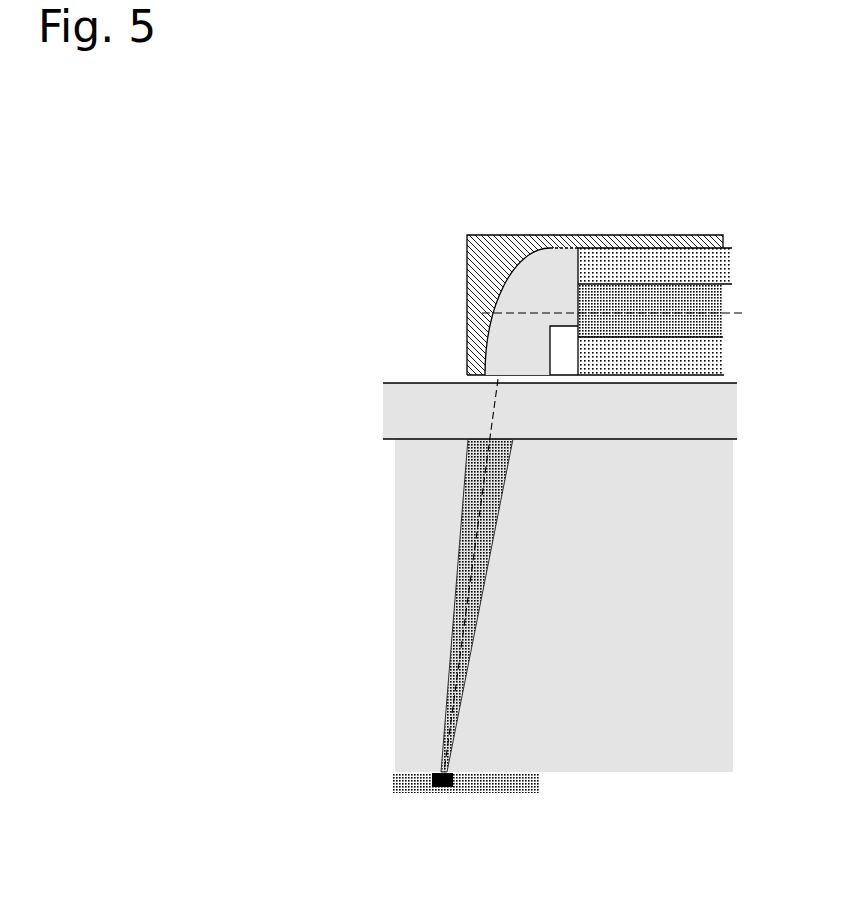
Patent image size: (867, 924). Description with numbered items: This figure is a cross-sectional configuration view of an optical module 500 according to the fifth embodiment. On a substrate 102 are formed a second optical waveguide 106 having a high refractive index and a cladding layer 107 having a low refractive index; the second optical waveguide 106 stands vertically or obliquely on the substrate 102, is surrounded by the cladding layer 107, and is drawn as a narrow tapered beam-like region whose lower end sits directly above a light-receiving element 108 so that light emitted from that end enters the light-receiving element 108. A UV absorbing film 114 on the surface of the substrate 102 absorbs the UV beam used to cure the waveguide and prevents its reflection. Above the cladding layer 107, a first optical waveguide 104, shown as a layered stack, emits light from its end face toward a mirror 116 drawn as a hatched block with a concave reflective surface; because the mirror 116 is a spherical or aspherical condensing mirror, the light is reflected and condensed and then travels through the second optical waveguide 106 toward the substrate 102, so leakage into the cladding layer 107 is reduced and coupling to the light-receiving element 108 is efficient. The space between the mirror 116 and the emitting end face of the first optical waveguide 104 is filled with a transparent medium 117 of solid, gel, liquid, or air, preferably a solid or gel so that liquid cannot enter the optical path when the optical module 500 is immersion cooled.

The optical module 500 is at (280, 188).
The first optical waveguide 104 is at (655, 246).
The second optical waveguide 106 is at (498, 502).
The cladding layer 107 is at (717, 590).
The light-receiving element 108 is at (440, 790).
The UV absorbing film 114 is at (467, 762).
The mirror 116 is at (482, 280).
The transparent medium 117 is at (556, 262).
The substrate 102 is at (520, 788).